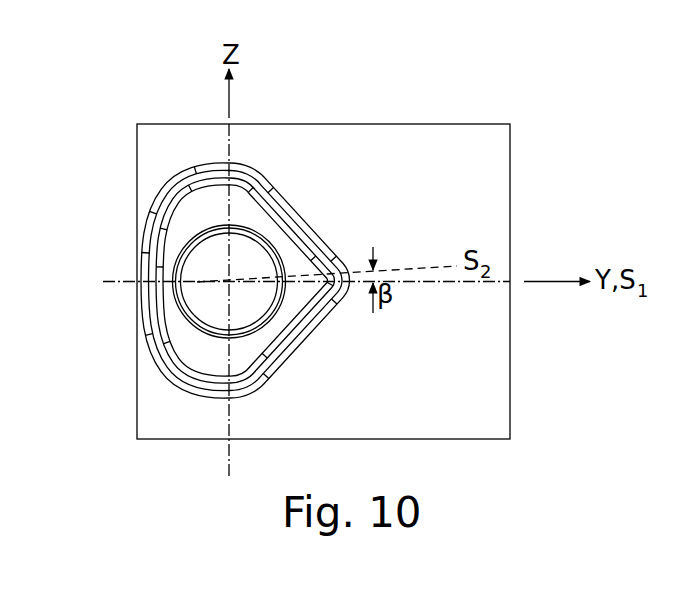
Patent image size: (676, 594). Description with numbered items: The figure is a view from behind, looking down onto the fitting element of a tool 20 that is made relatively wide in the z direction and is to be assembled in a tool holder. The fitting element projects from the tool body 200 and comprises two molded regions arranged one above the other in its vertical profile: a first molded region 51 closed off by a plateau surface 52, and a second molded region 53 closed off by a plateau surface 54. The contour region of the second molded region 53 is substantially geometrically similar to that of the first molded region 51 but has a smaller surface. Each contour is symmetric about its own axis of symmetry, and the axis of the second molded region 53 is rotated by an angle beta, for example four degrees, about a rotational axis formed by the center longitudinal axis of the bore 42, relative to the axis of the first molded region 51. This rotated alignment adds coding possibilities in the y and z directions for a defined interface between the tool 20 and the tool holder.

The tool 20 is at (200, 99).
The bore 42 is at (200, 265).
The first molded region 51 is at (181, 385).
The plateau surface 52 is at (258, 190).
The second molded region 53 is at (192, 347).
The plateau surface 54 is at (295, 260).
The tool body 200 is at (390, 152).